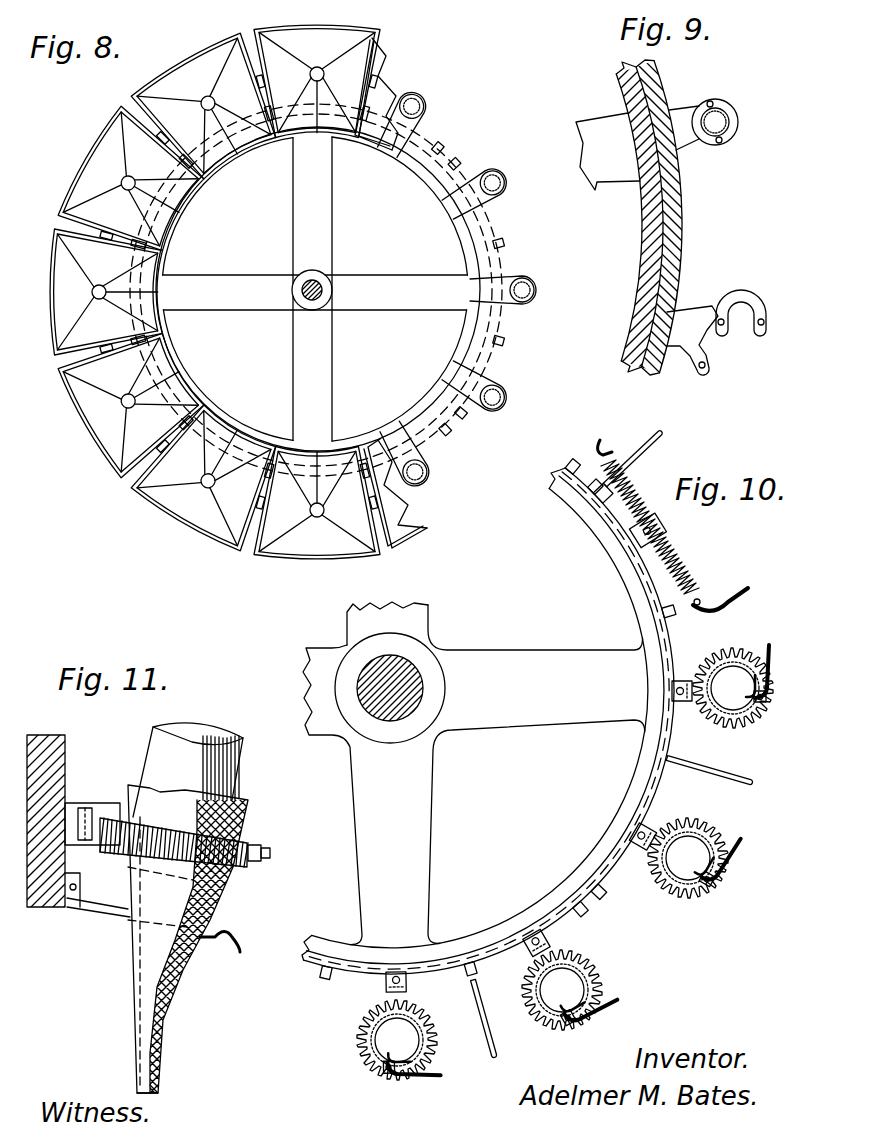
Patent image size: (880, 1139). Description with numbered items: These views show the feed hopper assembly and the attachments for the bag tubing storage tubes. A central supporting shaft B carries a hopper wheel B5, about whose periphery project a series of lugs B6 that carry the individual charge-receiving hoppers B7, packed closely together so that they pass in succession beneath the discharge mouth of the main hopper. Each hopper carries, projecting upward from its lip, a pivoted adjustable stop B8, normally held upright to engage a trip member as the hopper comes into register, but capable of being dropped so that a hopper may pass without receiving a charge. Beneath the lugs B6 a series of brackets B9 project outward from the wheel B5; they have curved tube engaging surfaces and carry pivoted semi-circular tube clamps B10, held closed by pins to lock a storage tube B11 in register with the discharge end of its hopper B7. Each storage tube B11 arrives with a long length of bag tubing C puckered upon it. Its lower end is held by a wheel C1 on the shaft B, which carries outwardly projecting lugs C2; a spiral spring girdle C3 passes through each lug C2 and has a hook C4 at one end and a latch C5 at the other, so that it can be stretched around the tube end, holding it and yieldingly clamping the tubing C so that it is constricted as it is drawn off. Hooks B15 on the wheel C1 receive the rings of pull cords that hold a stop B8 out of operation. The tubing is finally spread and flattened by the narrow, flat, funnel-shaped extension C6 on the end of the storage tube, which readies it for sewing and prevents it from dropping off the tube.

In FIG. 8, the central supporting shaft B is at (305, 287).
In FIG. 10, the central supporting shaft B is at (423, 683).
In FIG. 8, the hopper wheel B5 is at (460, 248).
In FIG. 9, the hopper wheel B5 is at (650, 253).
In FIG. 8, the outwardly projecting lugs B6 is at (473, 173).
In FIG. 8, the charge-receiving hoppers B7 is at (123, 89).
In FIG. 8, the adjustable stop B8 is at (262, 48).
In FIG. 9, the brackets B9 is at (677, 118).
In FIG. 9, the semi-circular tube clamps B10 is at (737, 105).
In FIG. 9, the storage tube B11 is at (732, 127).
In FIG. 10, the storage tube B11 is at (733, 708).
In FIG. 11, the storage tube B11 is at (158, 737).
In FIG. 10, the hooks B15 is at (662, 437).
In FIG. 11, the hooks B15 is at (102, 917).
In FIG. 10, the bag tubing C is at (723, 880).
In FIG. 11, the bag tubing C is at (162, 1065).
In FIG. 10, the wheel C1 is at (630, 618).
In FIG. 10, the lug C2 is at (683, 670).
In FIG. 11, the lug C2 is at (102, 810).
In FIG. 10, the spiral spring girdle C3 is at (685, 565).
In FIG. 11, the spiral spring girdle C3 is at (233, 870).
In FIG. 10, the hook C4 is at (602, 447).
In FIG. 10, the latch C5 is at (725, 593).
In FIG. 11, the latch C5 is at (272, 852).
In FIG. 11, the flat funnel-shaped extension C6 is at (155, 1010).